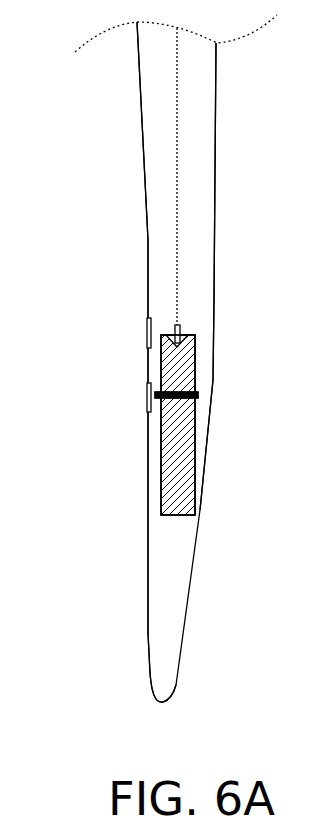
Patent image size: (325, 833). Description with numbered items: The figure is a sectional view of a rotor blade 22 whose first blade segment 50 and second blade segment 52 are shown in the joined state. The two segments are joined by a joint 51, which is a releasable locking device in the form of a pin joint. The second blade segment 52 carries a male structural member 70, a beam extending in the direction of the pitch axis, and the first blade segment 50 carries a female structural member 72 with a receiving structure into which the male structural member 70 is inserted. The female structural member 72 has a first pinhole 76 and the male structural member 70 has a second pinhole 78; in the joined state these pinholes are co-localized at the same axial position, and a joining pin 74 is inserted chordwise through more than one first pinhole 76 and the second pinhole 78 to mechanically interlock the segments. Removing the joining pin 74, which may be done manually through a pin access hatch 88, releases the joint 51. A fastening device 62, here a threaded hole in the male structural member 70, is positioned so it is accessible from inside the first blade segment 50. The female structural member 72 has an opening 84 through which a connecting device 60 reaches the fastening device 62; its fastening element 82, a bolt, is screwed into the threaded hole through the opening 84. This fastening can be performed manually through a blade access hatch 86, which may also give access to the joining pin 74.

The rotor blade 22 is at (97, 102).
The first blade segment 50 is at (146, 141).
The second blade segment 52 is at (148, 532).
The connecting device 60 is at (177, 187).
The fastening device 62 is at (161, 356).
The male structural member 70 is at (162, 447).
The female structural member 72 is at (195, 358).
The joining pin 74 is at (200, 397).
The first pinhole 76 is at (214, 382).
The second pinhole 78 is at (176, 397).
The fastening element 82 is at (182, 328).
The opening 84 is at (173, 340).
The blade access hatch 86 is at (147, 330).
The pin access hatch 88 is at (147, 407).
The joint 51 is at (202, 403).